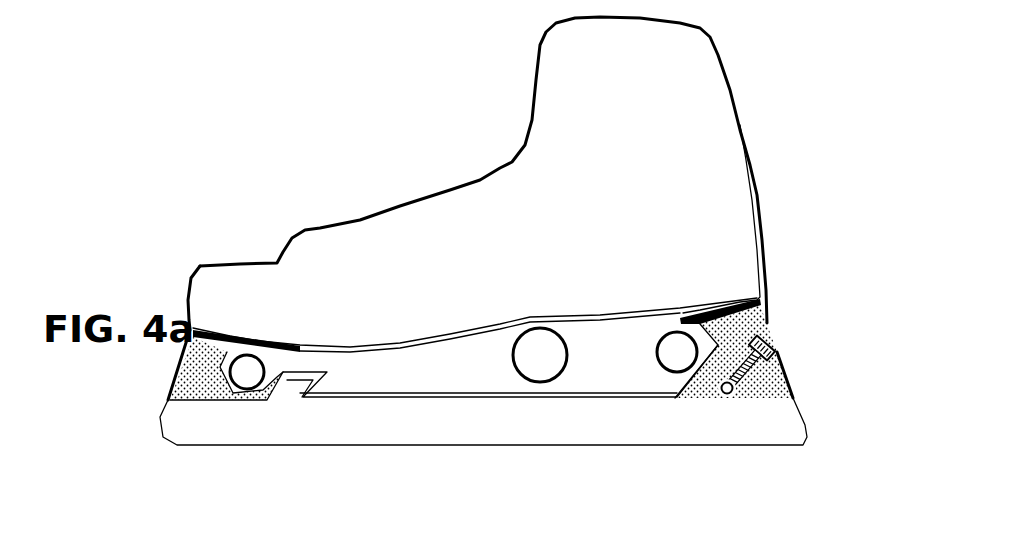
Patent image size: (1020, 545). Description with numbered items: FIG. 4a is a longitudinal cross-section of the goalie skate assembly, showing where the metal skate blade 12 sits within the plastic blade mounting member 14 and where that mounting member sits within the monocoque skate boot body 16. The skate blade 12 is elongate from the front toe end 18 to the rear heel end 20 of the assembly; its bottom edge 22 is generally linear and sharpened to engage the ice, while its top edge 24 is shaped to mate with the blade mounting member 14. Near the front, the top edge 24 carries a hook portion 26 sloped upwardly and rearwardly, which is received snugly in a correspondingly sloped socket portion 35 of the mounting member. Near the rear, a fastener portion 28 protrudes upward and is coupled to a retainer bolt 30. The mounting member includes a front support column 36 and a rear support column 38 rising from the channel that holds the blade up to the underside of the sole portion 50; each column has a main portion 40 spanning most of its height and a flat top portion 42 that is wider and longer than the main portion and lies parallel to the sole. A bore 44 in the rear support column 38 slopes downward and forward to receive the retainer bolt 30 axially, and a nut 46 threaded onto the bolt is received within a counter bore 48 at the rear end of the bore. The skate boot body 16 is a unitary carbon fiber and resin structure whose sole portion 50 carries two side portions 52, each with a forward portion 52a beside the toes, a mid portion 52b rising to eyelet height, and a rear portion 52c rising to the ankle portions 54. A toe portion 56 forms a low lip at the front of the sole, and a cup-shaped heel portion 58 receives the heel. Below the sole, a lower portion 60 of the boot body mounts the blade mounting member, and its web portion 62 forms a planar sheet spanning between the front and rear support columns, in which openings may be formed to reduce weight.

The skate blade 12 is at (787, 433).
The blade mounting member 14 is at (507, 412).
The skate boot body 16 is at (800, 200).
The front toe end 18 is at (172, 243).
The rear heel end 20 is at (797, 283).
The bottom edge 22 is at (460, 445).
The top edge 24 is at (550, 400).
The hook portion 26 is at (297, 380).
The fastener portion 28 is at (713, 380).
The retainer bolt 30 is at (758, 395).
The socket portion 35 is at (327, 380).
The front support column 36 is at (193, 362).
The rear support column 38 is at (737, 333).
The main portion 40 is at (230, 358).
The top portion 42 is at (262, 345).
The bore 44 is at (778, 360).
The nut 46 is at (773, 348).
The counter bore 48 is at (766, 331).
The sole portion 50 is at (457, 330).
The side portions 52 is at (497, 222).
The forward portion 52a is at (240, 280).
The mid portion 52b is at (413, 240).
The rear portion 52c is at (717, 235).
The ankle portions 54 is at (630, 120).
The toe portion 56 is at (190, 280).
The heel portion 58 is at (767, 227).
The lower portion 60 is at (440, 372).
The web portion 62 is at (607, 369).